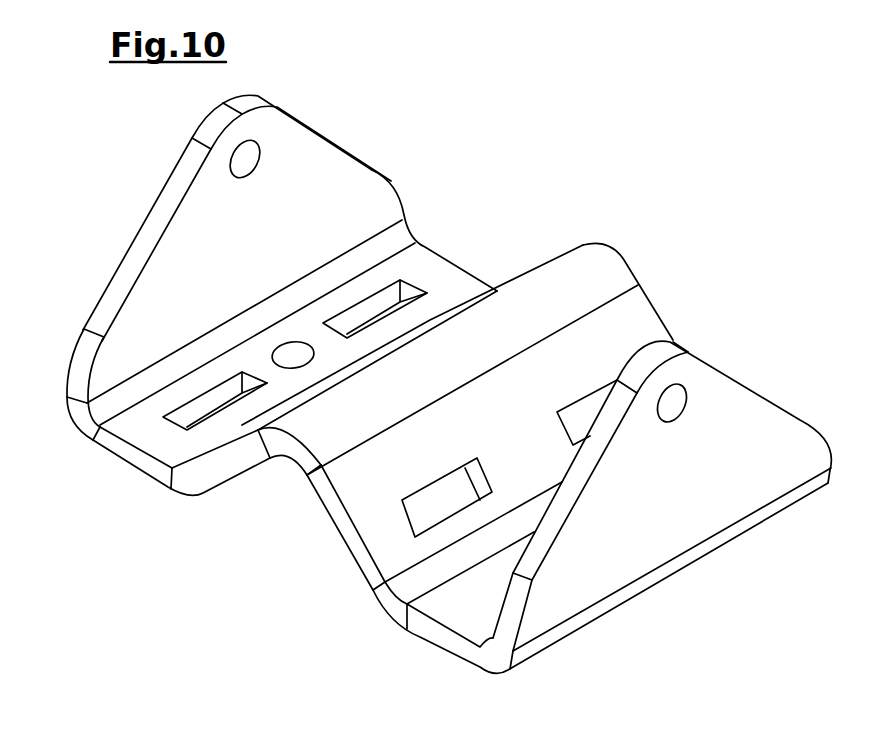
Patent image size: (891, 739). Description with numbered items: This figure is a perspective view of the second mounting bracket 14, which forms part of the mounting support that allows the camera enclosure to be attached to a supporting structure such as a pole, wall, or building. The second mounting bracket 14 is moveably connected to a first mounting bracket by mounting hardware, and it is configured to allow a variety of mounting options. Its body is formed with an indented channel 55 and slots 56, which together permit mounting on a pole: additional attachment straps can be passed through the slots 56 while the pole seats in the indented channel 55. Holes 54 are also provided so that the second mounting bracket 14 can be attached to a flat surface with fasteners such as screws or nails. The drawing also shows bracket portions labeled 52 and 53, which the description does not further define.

The second mounting bracket 14 is at (624, 260).
The first mounting tab with hole 52 is at (263, 150).
The second mounting tab with hole 53 is at (735, 370).
The holes 54 is at (316, 352).
The indented channel 55 is at (288, 458).
The slots 56 is at (402, 512).